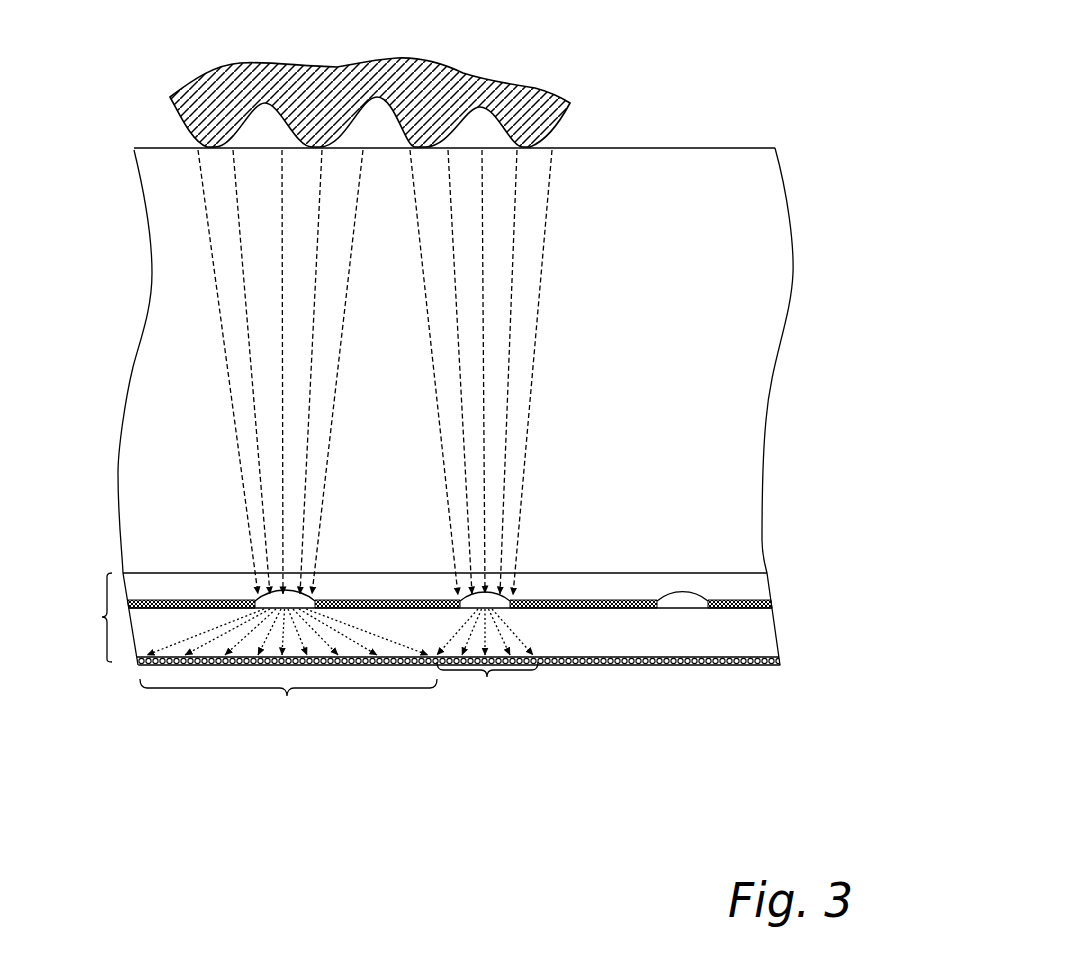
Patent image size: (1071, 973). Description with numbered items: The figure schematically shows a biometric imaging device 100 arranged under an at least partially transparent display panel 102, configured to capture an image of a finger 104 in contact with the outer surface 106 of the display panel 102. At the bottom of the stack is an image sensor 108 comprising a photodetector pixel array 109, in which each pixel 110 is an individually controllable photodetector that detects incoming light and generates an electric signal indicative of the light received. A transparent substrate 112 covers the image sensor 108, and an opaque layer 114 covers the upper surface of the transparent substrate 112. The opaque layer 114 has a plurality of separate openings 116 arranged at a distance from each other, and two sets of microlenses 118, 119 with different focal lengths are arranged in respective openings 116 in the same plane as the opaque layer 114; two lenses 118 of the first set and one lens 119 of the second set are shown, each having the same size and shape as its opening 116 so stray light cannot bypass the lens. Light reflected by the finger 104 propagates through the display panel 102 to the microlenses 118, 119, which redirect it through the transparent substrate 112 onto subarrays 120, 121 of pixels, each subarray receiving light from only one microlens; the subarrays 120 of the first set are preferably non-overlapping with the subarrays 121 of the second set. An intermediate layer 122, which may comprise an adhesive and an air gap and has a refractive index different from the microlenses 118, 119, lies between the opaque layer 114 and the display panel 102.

The biometric imaging device 100 is at (79, 617).
The display panel 102 is at (165, 372).
The finger 104 is at (537, 83).
The outer surface 106 is at (690, 147).
The image sensor 108 is at (140, 664).
The photodetector pixel array 109 is at (737, 657).
The pixel 110 is at (212, 658).
The transparent substrate 112 is at (748, 633).
The opaque layer 114 is at (197, 598).
The opening 116 is at (490, 608).
The microlens of the first set 118 is at (283, 598).
The microlens of the second set 119 is at (495, 600).
The subarray of pixels 120 is at (288, 670).
The subarray of pixels 121 is at (487, 687).
The intermediate layer 122 is at (147, 585).